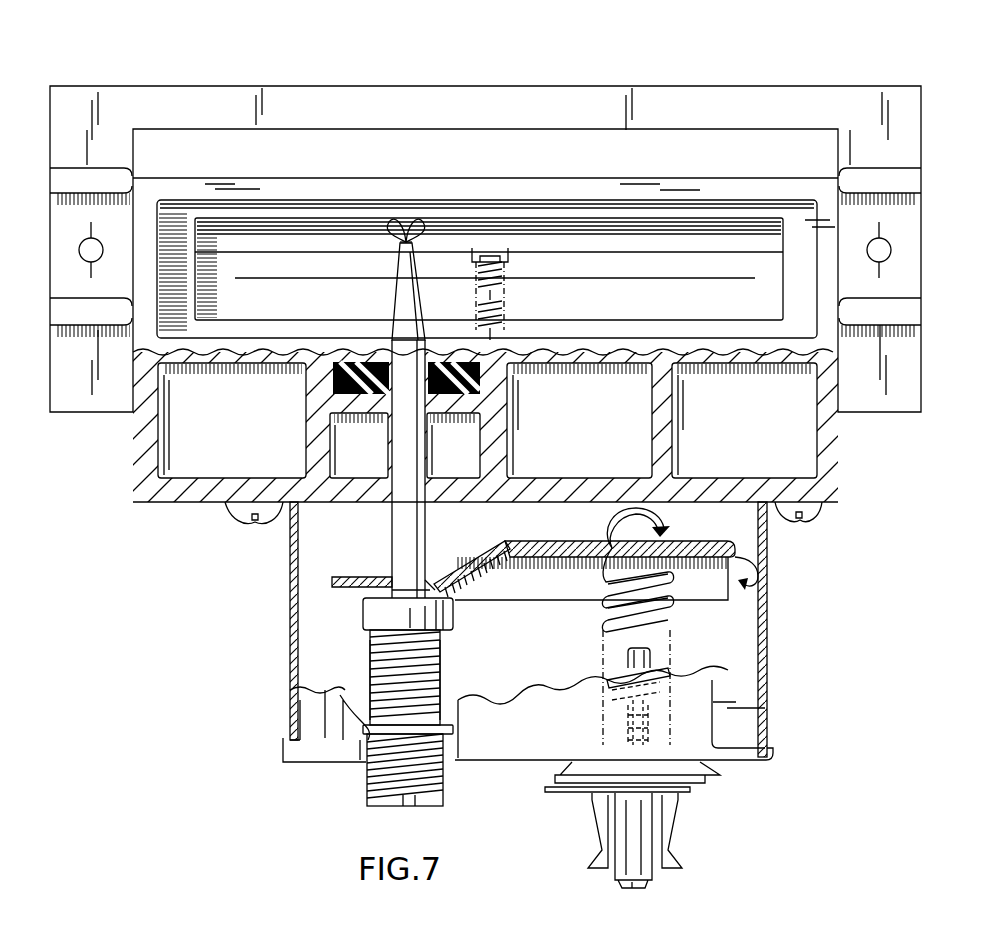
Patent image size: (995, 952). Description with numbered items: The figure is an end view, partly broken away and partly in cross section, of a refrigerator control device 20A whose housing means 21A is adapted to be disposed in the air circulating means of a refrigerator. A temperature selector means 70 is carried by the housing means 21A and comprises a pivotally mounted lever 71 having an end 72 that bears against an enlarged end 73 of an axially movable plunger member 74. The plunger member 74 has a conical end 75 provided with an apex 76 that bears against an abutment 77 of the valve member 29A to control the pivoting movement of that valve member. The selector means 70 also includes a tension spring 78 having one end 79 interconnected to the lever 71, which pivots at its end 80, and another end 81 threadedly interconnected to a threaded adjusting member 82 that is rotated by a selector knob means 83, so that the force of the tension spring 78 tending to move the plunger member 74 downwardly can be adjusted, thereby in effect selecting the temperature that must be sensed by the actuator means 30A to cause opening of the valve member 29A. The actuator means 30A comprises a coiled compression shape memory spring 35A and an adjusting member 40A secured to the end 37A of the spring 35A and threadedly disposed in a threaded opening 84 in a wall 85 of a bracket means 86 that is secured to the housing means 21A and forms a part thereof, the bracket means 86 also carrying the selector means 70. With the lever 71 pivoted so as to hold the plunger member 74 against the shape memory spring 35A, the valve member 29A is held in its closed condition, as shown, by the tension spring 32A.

The control device 20A is at (781, 64).
The housing means 21A is at (133, 462).
The valve member 29A is at (700, 244).
The actuator means 30A is at (350, 653).
The tension spring 32A is at (506, 300).
The coiled compression shape memory spring 35A is at (442, 666).
The end of spring 37A is at (450, 717).
The adjusting member 40A is at (368, 728).
The temperature selector means 70 is at (718, 817).
The lever 71 is at (518, 543).
The end of lever 72 is at (441, 583).
The enlarged end of plunger member 73 is at (365, 615).
The plunger member 74 is at (392, 526).
The conical end 75 is at (392, 264).
The apex 76 is at (414, 234).
The abutment 77 is at (399, 224).
The tension spring 78 is at (672, 626).
The end of tension spring 79 is at (656, 522).
The end of lever 80 is at (770, 580).
The end of tension spring 81 is at (692, 672).
The threaded adjusting member 82 is at (628, 740).
The selector knob means 83 is at (598, 842).
The threaded opening 84 is at (445, 792).
The wall 85 is at (322, 765).
The bracket means 86 is at (768, 628).